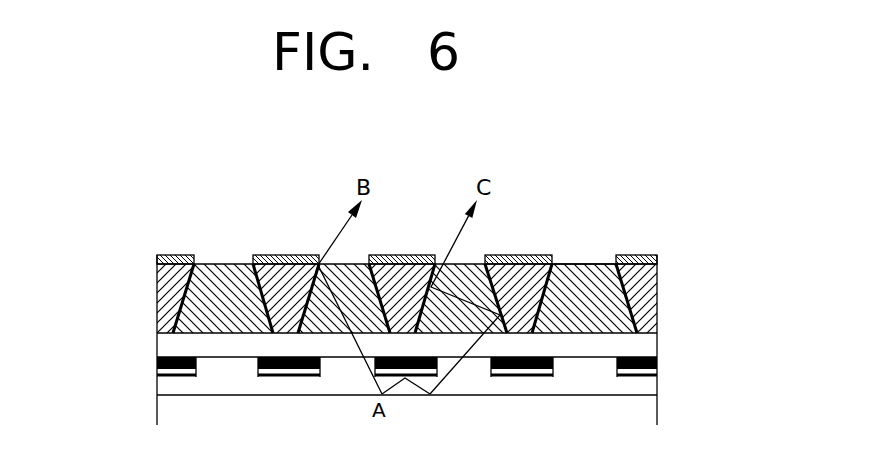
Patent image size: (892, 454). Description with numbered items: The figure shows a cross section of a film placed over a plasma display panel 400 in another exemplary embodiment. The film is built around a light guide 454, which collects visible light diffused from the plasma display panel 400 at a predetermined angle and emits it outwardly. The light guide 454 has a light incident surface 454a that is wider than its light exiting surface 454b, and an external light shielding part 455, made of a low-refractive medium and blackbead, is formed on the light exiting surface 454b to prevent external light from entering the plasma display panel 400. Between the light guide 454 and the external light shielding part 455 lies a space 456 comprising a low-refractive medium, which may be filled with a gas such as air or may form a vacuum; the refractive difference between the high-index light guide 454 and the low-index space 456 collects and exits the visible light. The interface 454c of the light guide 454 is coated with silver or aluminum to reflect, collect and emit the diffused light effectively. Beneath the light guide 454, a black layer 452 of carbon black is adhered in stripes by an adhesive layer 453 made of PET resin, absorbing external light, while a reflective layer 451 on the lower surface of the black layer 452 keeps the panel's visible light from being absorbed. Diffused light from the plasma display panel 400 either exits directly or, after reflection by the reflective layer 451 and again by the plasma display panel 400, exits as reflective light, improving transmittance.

The plasma display panel 400 is at (173, 408).
The reflective layer 451 is at (157, 378).
The black layer 452 is at (157, 365).
The adhesive layer 453 is at (167, 347).
The light guide 454 is at (157, 296).
The light incident surface 454a is at (635, 318).
The light exiting surface 454b is at (612, 262).
The interface 454c is at (613, 282).
The external light shielding part 455 is at (181, 257).
The low-refractive medium (space) 456 is at (157, 272).